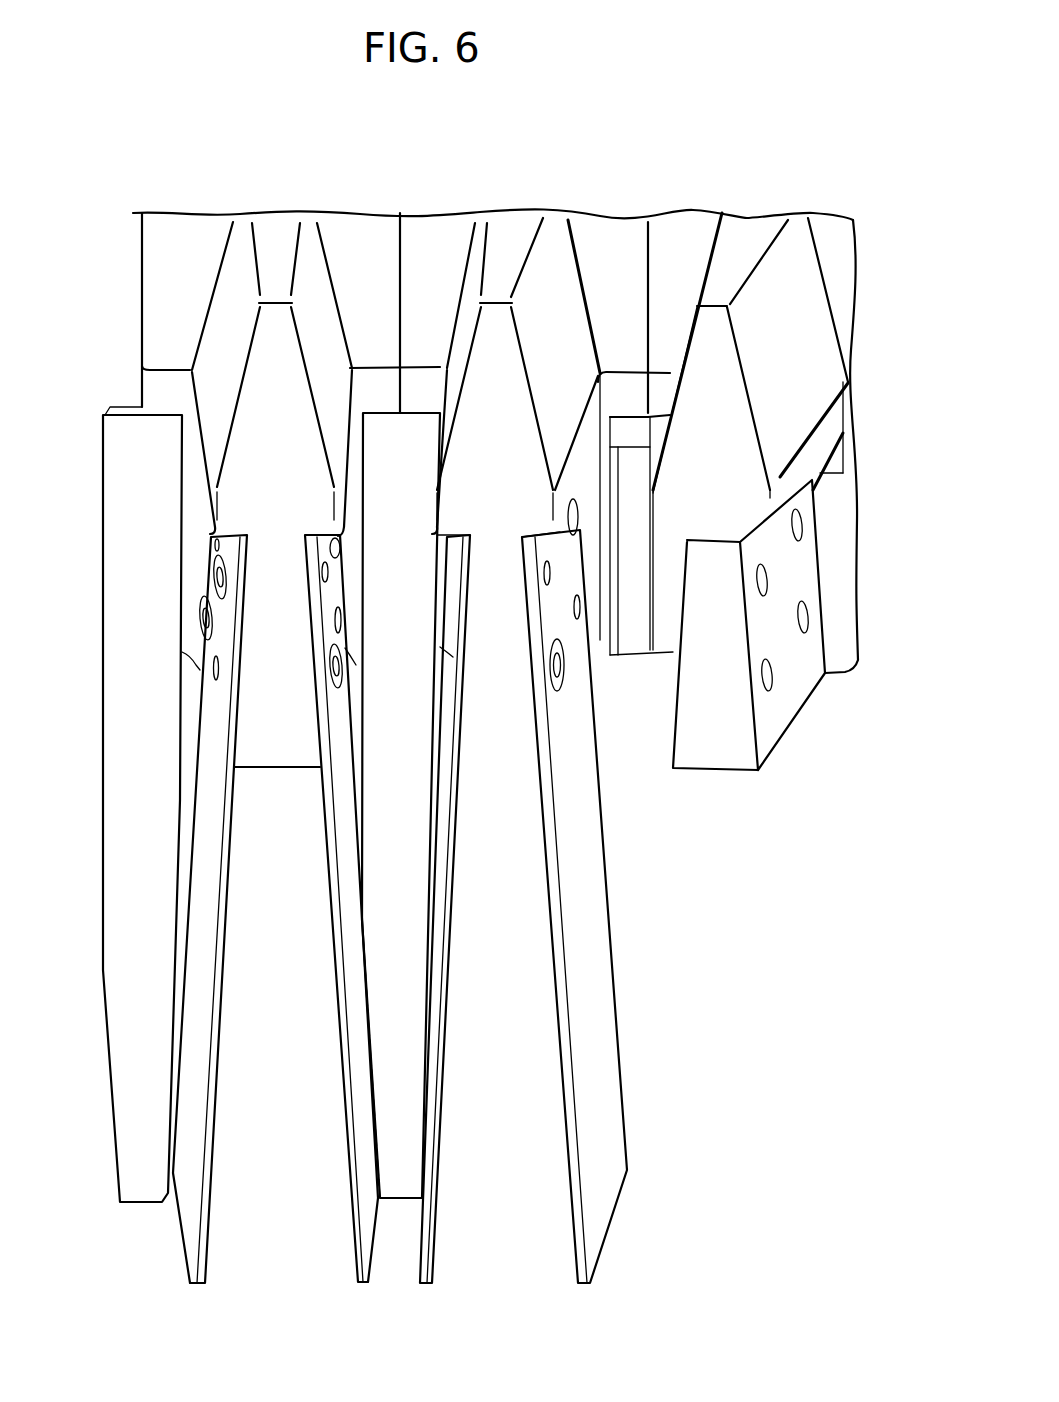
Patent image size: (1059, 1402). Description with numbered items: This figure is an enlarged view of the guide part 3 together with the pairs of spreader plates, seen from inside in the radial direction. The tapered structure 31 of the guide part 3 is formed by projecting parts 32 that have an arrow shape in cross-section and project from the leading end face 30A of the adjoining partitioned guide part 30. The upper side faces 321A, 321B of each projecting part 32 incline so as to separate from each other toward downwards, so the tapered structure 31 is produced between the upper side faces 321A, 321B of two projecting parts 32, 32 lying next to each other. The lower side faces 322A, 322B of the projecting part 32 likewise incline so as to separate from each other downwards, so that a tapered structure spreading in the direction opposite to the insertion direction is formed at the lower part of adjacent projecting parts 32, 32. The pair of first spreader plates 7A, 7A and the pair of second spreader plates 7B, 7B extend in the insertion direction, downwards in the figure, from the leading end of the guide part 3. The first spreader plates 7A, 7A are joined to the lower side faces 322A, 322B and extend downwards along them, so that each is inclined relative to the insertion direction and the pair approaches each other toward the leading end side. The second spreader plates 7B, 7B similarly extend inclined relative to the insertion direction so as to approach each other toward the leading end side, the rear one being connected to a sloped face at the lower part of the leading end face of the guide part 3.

The guide part 3 is at (742, 86).
The partitioned guide part 30 is at (378, 247).
The leading end face 30A is at (173, 312).
The tapered structure 31 is at (423, 272).
The projecting part 32 is at (276, 350).
The upper side face 321A is at (225, 308).
The upper side face 321B is at (320, 313).
The lower side face 322A is at (237, 703).
The lower side face 322B is at (322, 713).
The first spreader plate 7A is at (190, 1072).
The second spreader plate 7B is at (127, 973).